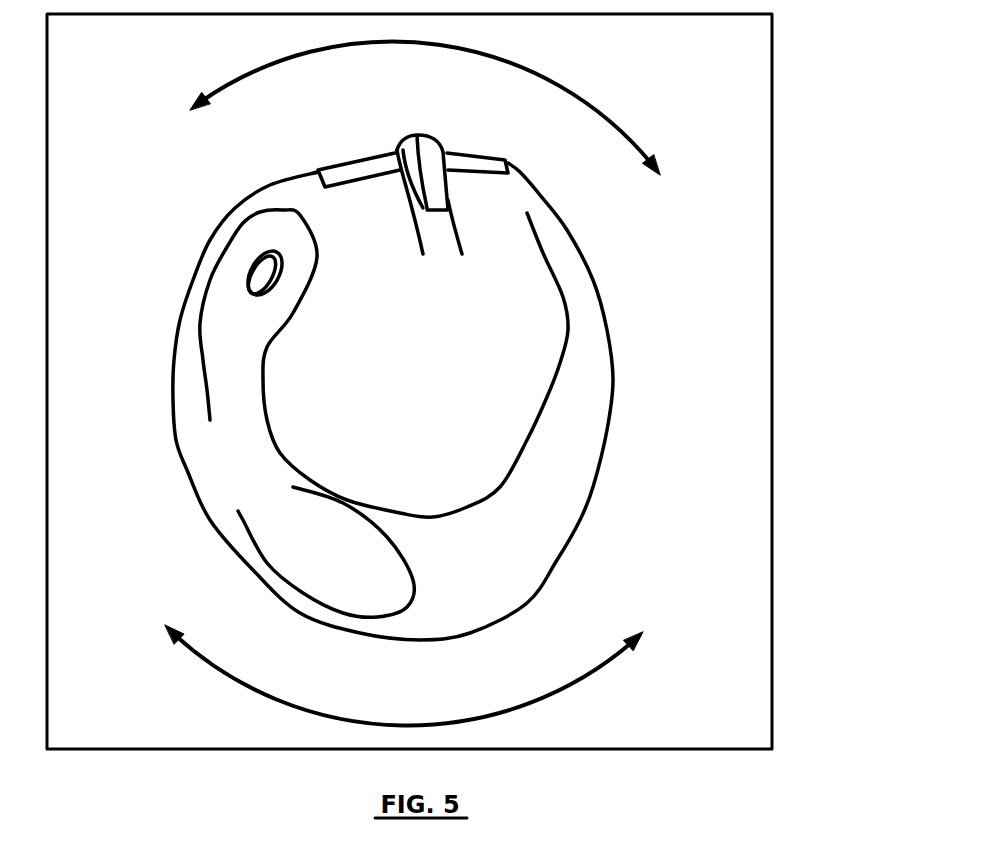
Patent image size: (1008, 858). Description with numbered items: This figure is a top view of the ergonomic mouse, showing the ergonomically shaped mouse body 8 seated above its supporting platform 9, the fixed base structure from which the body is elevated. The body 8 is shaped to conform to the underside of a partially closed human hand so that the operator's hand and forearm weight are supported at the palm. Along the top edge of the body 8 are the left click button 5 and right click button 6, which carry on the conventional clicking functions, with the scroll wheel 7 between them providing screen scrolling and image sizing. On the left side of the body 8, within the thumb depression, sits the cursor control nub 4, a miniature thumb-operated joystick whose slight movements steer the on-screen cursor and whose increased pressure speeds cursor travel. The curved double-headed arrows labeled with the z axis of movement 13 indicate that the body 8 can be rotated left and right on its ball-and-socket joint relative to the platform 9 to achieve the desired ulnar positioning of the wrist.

The cursor control nub 4 is at (254, 272).
The left click button 5 is at (343, 158).
The right click button 6 is at (470, 153).
The scroll wheel 7 is at (415, 134).
The ergonomic mouse body 8 is at (583, 503).
The supporting platform 9 is at (772, 376).
The z axis of movement 13 is at (415, 383).